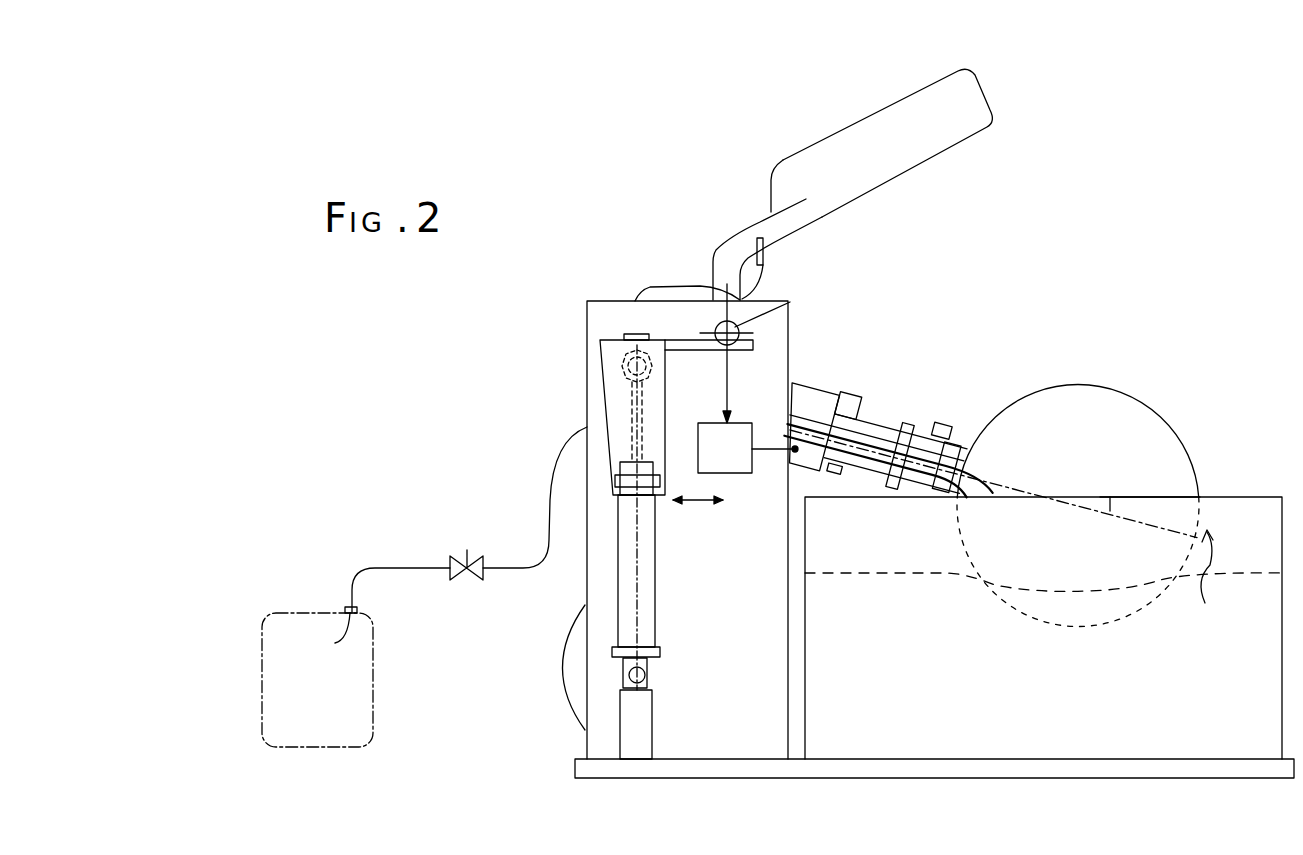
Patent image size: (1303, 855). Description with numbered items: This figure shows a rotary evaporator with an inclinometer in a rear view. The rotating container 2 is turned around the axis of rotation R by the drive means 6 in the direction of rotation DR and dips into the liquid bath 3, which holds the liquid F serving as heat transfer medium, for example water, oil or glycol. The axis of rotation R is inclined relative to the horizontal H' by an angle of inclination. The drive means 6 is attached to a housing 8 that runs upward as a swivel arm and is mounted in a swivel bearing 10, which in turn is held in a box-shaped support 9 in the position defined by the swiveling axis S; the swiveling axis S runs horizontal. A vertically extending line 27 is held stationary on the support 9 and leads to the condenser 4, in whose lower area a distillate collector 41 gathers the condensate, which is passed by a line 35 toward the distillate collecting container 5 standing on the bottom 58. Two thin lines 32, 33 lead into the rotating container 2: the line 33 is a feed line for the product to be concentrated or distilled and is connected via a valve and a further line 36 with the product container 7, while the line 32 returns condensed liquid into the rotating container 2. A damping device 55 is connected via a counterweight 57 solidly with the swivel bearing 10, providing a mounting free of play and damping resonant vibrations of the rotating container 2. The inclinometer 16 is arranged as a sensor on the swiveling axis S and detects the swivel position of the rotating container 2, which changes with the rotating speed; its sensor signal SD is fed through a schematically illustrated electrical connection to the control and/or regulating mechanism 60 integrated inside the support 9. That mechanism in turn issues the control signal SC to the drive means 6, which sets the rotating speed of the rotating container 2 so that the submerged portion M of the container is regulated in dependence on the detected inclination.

The rotating container 2 is at (1135, 415).
The liquid bath 3 is at (1240, 510).
The condenser 4 is at (972, 121).
The distillate collecting container 5 is at (563, 660).
The drive means 6 is at (824, 394).
The product container 7 is at (373, 687).
The housing 8 is at (859, 401).
The support 9 is at (597, 310).
The swivel bearing 10 is at (760, 302).
The inclinometer 16 is at (718, 324).
The line 27 is at (726, 248).
The line 32 is at (958, 498).
The line 33 is at (550, 477).
The line 35 is at (657, 289).
The line 36 is at (360, 567).
The distillate collector 41 is at (773, 241).
The damping device 55 is at (628, 567).
The counterweight 57 is at (613, 392).
The bottom 58 is at (643, 766).
The control and/or regulating mechanism 60 is at (697, 447).
The swiveling axis S is at (720, 347).
The sensor signal SD is at (755, 392).
The control signal SC is at (773, 453).
The axis of rotation R is at (1083, 503).
The horizontal H' is at (1150, 471).
The direction of rotation DR is at (1202, 586).
The liquid F is at (1043, 622).
The submerged portion M is at (1078, 617).